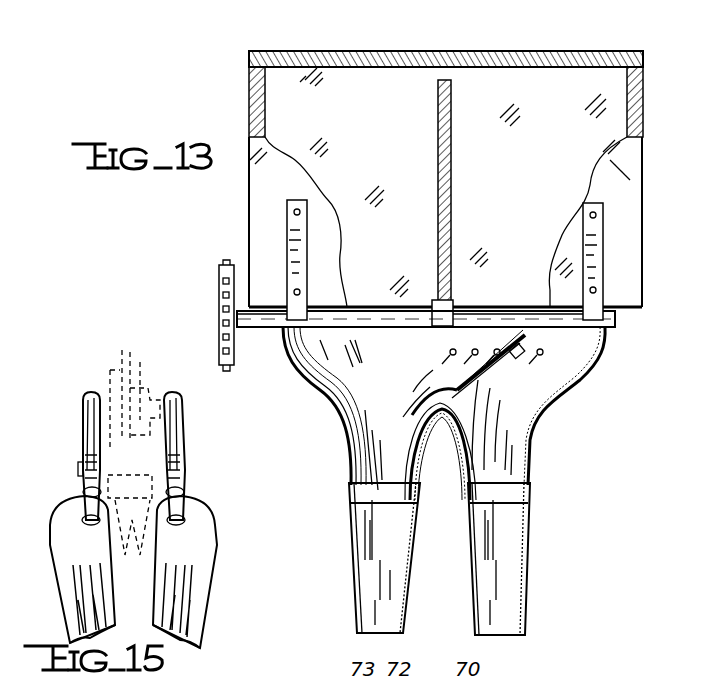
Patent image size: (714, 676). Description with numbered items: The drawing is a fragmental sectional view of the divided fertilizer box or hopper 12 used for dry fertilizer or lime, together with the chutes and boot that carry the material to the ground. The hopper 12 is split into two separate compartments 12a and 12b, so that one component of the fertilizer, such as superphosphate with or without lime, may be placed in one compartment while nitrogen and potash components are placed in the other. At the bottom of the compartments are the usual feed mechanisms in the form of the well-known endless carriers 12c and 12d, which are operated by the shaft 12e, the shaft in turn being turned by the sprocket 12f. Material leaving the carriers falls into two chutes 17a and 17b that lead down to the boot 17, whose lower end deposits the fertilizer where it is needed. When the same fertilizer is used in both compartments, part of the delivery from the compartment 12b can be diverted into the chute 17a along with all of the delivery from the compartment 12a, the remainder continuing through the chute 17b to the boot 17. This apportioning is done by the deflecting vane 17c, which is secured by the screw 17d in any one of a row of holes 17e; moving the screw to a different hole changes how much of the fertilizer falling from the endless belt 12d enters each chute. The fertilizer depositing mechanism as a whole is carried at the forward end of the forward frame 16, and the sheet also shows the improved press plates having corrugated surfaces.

In FIG. 13, the fertilizer box or hopper 12 is at (249, 96).
In FIG. 13, the hopper compartment 12a is at (346, 72).
In FIG. 13, the hopper compartment 12b is at (537, 72).
In FIG. 13, the endless carrier 12c is at (385, 322).
In FIG. 13, the endless carrier 12d is at (548, 322).
In FIG. 13, the shaft 12e is at (250, 324).
In FIG. 13, the sprocket 12f is at (220, 340).
In FIG. 13, the boot 17 is at (355, 550).
In FIG. 13, the chute 17a is at (365, 406).
In FIG. 13, the chute 17b is at (531, 422).
In FIG. 13, the deflecting vane 17c is at (487, 386).
In FIG. 13, the screw 17d is at (522, 356).
In FIG. 13, the holes 17e is at (452, 354).
In FIG. 15, the forward frame 16 is at (216, 617).